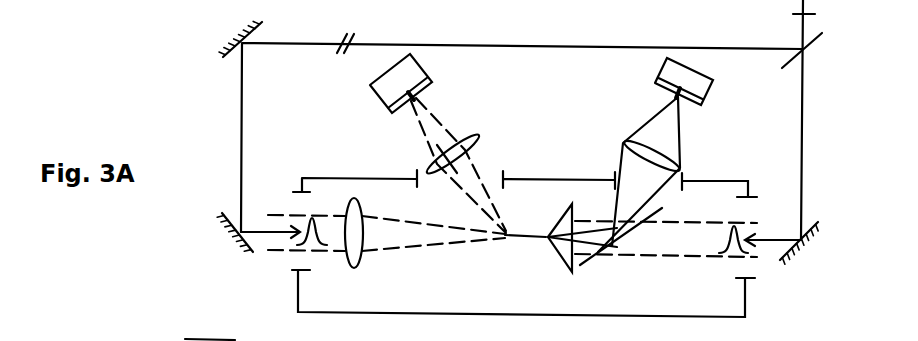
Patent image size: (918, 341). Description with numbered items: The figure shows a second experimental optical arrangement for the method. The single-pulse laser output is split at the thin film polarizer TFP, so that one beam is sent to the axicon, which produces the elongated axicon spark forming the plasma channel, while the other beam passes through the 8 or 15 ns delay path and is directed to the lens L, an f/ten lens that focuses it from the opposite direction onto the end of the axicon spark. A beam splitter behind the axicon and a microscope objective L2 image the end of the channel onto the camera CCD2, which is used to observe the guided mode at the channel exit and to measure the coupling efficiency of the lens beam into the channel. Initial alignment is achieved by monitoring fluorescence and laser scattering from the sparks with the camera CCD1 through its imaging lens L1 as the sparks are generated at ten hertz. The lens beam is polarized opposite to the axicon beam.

The CCD camera CCD1 is at (438, 83).
The CCD camera CCD2 is at (652, 81).
The lens L1 is at (466, 153).
The microscope objective L2 is at (668, 156).
The lens L is at (354, 246).
The element axicon is at (563, 249).
The thin film polarizer TFP is at (789, 60).
The variable delay 8 or 15 ns delay is at (362, 23).